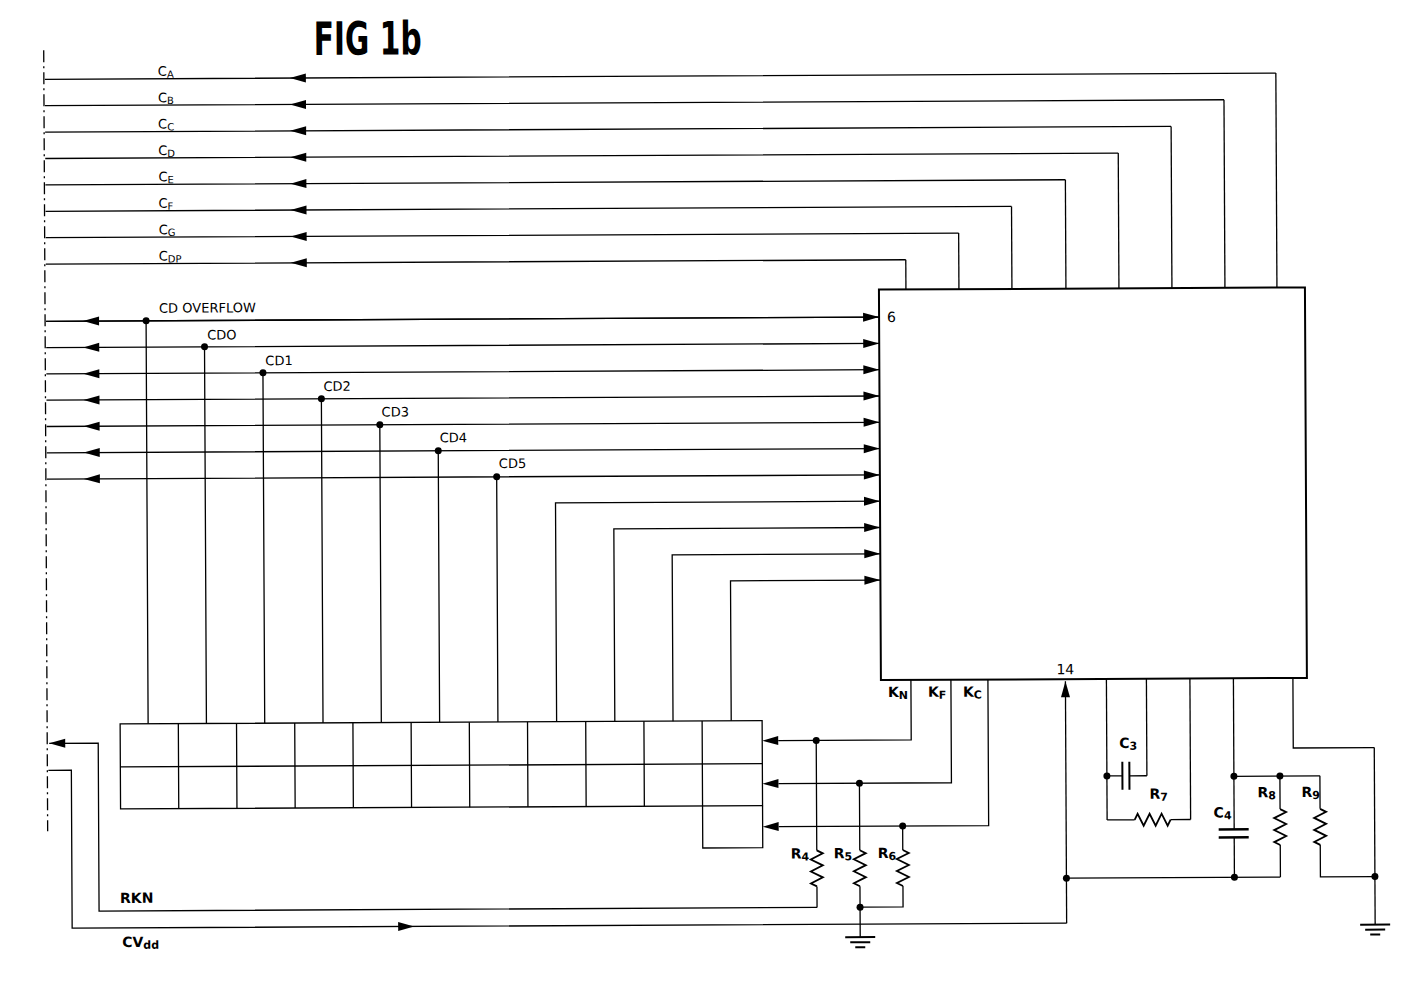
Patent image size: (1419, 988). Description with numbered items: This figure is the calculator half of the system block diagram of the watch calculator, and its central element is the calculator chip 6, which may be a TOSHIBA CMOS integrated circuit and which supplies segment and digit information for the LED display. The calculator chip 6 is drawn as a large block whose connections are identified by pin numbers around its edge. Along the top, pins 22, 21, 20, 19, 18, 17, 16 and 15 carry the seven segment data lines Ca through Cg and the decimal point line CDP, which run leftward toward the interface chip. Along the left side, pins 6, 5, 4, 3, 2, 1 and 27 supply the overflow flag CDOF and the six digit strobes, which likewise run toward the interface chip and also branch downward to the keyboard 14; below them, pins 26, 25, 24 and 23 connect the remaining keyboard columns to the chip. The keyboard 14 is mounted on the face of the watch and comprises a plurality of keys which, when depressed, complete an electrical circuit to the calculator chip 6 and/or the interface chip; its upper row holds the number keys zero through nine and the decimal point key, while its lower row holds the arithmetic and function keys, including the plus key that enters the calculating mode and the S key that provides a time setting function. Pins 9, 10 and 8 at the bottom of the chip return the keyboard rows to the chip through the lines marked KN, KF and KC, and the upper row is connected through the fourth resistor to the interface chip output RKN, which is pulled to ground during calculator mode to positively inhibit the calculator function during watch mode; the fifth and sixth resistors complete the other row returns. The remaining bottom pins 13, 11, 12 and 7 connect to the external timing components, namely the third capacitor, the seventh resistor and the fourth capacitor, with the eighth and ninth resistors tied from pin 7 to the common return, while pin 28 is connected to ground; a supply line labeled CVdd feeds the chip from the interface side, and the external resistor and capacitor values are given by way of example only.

The calculator circuit 6 is at (1306, 338).
The keyboard 14 is at (288, 834).
The chip pin 1 is at (880, 449).
The watch calculator interface circuit 2 is at (880, 422).
The chip pin 3 is at (879, 396).
The watch circuit 4 is at (879, 370).
The chip pin 5 is at (879, 343).
The chip pin 7 is at (1234, 744).
The six digit LED display 8 is at (877, 747).
The chip pin 9 is at (839, 703).
The chip pin 10 is at (861, 725).
The chip pin 11 is at (1146, 718).
The chip pin 12 is at (1190, 739).
The chip pin 13 is at (1106, 740).
The chip pin 15 is at (1276, 189).
The chip pin 16 is at (1224, 203).
The chip pin 17 is at (1171, 216).
The chip pin 18 is at (1118, 230).
The chip pin 19 is at (1065, 243).
The chip pin 20 is at (1012, 256).
The chip pin 21 is at (959, 270).
The chip pin 22 is at (906, 284).
The chip pin 23 is at (885, 580).
The chip pin 24 is at (885, 554).
The chip pin 25 is at (885, 527).
The chip pin 26 is at (885, 501).
The chip pin 27 is at (885, 475).
The chip pin 28 is at (1329, 704).